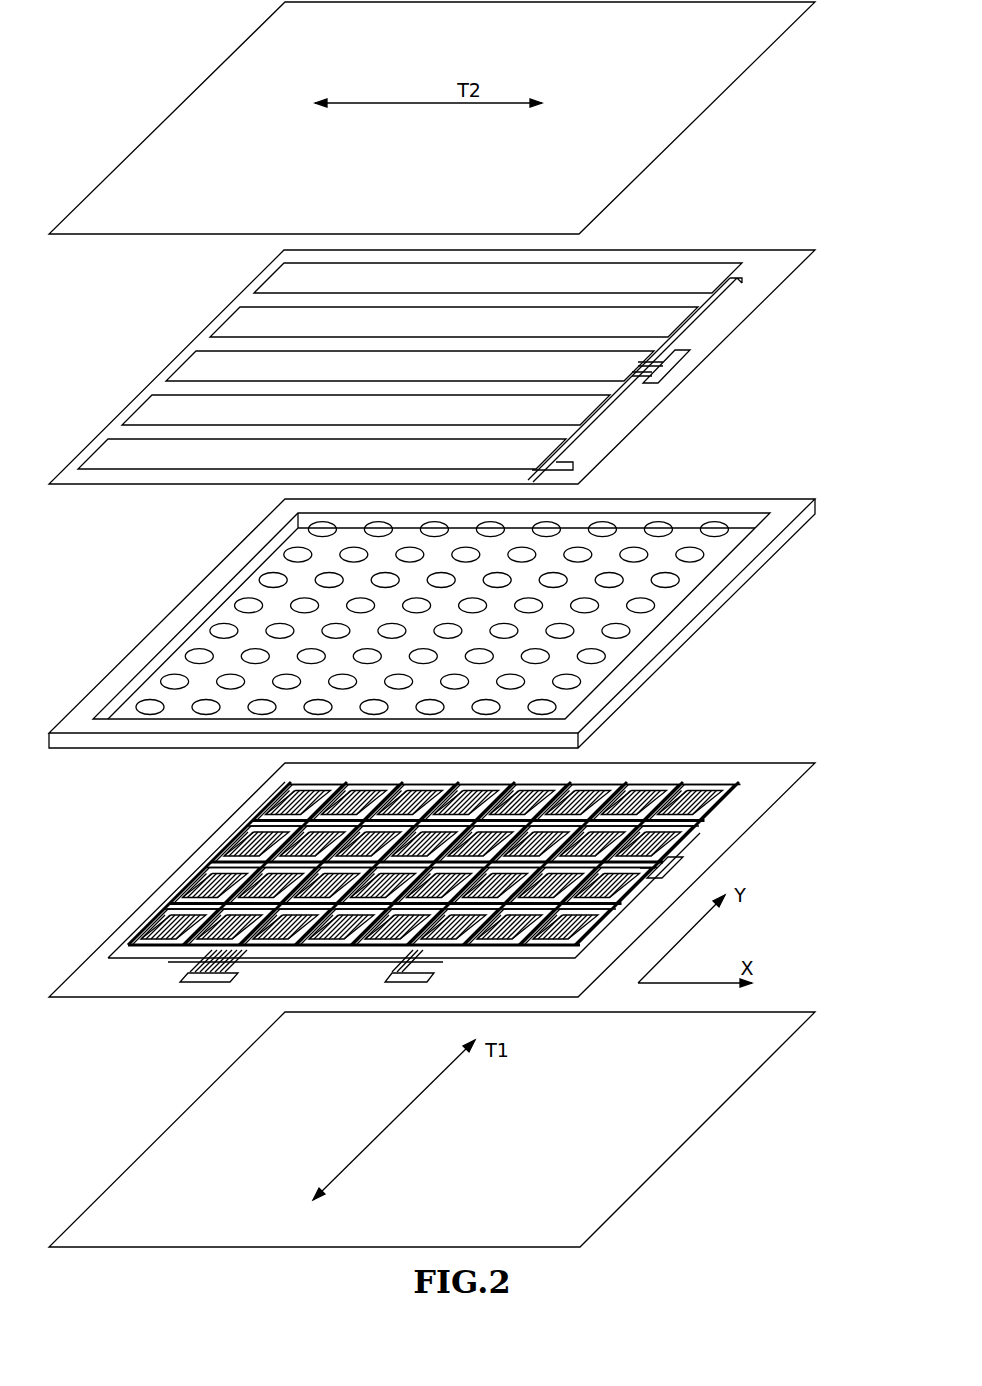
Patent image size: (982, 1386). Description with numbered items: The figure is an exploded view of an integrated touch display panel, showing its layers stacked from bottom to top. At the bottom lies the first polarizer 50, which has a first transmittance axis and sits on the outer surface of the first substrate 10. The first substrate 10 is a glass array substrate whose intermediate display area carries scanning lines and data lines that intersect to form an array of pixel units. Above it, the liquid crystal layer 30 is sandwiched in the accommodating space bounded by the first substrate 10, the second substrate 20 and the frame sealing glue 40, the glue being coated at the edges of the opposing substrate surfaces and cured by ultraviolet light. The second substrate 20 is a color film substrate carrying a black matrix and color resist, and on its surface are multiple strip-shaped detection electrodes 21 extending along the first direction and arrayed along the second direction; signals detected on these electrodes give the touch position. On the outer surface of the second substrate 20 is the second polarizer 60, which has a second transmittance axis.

The first substrate 10 is at (732, 800).
The second substrate 20 is at (732, 294).
The strip-shaped detection electrodes 21 is at (685, 258).
The liquid crystal layer 30 is at (702, 543).
The frame sealing glue 40 is at (712, 587).
The first polarizer 50 is at (710, 1100).
The second polarizer 60 is at (762, 43).